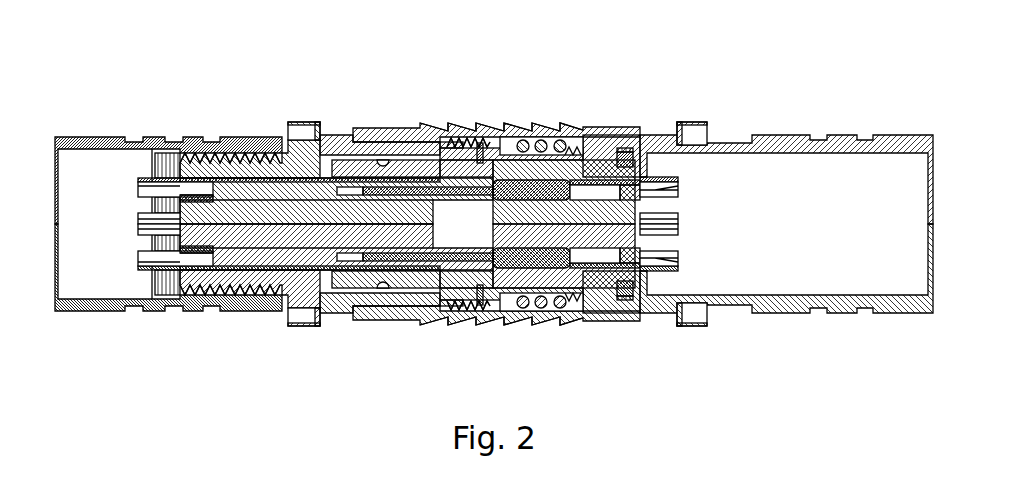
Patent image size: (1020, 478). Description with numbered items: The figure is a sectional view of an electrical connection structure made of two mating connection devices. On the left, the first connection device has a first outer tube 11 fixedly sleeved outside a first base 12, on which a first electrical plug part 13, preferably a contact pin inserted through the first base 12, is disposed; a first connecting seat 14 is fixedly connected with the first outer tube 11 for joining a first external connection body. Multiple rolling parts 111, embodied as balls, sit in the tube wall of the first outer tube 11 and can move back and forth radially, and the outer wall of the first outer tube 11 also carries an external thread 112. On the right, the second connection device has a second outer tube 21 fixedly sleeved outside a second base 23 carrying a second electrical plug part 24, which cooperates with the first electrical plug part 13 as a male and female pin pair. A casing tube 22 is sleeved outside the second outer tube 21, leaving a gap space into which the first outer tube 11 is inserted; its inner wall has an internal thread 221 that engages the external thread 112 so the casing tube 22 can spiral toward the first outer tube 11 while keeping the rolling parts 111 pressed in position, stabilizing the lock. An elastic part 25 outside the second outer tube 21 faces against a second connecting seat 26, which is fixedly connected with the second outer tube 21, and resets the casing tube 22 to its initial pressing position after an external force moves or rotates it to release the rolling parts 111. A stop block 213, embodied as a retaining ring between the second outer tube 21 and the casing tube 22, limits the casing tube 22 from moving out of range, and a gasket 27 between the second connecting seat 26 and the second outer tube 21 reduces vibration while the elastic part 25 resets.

The first outer tube 11 is at (334, 312).
The rolling part 111 is at (382, 137).
The external thread 112 is at (442, 136).
The first base 12 is at (263, 232).
The first electrical plug part 13 is at (213, 192).
The first connecting seat 14 is at (124, 311).
The second outer tube 21 is at (399, 312).
The stop block 213 is at (492, 136).
The casing tube 22 is at (450, 314).
The internal thread 221 is at (468, 224).
The second base 23 is at (606, 312).
The second electrical plug part 24 is at (688, 121).
The elastic part 25 is at (535, 306).
The second connecting seat 26 is at (666, 313).
The gasket 27 is at (628, 136).